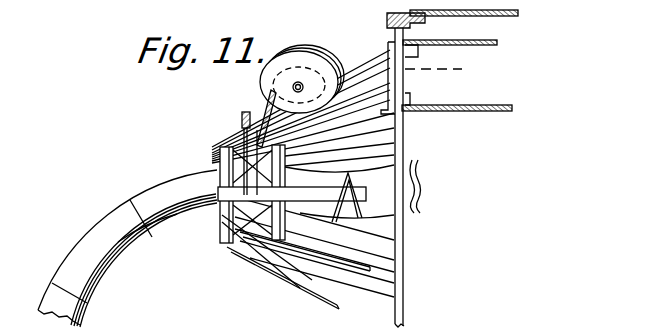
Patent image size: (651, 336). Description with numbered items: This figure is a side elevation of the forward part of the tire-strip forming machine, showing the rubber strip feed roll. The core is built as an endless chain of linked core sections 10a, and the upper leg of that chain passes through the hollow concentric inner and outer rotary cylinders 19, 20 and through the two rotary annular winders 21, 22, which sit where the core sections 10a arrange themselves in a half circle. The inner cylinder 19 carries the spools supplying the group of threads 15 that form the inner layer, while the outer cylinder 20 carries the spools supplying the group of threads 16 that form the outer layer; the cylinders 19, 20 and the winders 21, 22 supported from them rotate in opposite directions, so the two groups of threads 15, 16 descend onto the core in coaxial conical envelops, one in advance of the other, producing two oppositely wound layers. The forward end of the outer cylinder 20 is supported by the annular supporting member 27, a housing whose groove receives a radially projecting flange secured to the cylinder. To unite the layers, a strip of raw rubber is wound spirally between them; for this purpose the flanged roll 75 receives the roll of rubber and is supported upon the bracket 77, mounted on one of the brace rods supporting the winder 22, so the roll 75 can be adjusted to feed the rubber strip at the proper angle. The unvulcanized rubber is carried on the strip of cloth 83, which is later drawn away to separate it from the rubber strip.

The core section 10a is at (418, 174).
The group of threads 15 is at (233, 149).
The group of threads 16 is at (215, 226).
The inner rotary cylinder 19 is at (488, 100).
The outer rotary cylinder 20 is at (474, 38).
The rotary annular winder 21 is at (282, 246).
The rotary annular winder 22 is at (228, 250).
The annular supporting member 27 is at (395, 13).
The roll 75 is at (323, 80).
The bracket 77 is at (298, 84).
The strip of cloth 83 is at (243, 117).